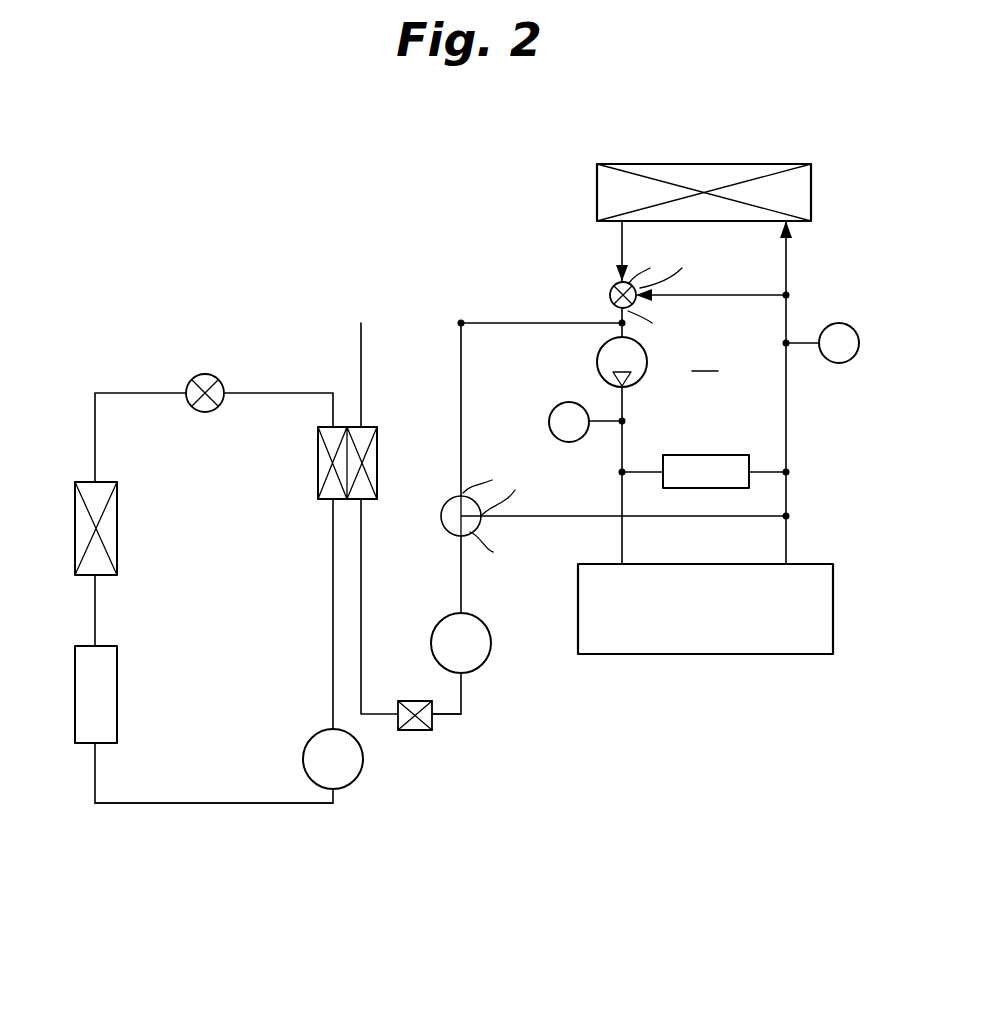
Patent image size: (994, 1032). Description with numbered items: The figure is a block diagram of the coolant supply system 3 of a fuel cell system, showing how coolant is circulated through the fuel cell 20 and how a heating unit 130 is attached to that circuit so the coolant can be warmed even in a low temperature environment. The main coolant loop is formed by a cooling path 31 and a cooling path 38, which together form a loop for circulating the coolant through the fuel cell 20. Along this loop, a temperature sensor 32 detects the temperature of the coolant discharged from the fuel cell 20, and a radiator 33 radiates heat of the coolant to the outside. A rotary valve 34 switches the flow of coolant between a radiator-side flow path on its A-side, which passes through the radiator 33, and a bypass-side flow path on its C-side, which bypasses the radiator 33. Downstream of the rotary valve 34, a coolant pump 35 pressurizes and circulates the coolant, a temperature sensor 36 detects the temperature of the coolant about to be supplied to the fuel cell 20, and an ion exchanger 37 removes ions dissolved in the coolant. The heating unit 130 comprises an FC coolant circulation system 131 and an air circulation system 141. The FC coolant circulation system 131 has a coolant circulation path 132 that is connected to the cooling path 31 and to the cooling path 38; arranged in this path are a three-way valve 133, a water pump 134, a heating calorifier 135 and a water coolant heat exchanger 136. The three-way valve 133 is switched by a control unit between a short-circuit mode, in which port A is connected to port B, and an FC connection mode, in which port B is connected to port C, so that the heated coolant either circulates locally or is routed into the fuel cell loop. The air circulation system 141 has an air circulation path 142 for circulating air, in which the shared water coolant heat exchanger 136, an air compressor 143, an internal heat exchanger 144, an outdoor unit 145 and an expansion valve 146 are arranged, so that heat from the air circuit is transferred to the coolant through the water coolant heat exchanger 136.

The heating unit 130 is at (333, 219).
The FC coolant circulation system 131 is at (408, 298).
The coolant circulation path 132 is at (446, 717).
The three-way valve 133 is at (483, 525).
The water pump 134 is at (488, 655).
The heating calorifier 135 is at (412, 732).
The water coolant heat exchanger 136 is at (378, 455).
The air circulation system 141 is at (193, 341).
The air circulation path 142 is at (220, 805).
The air compressor 143 is at (358, 778).
The internal heat exchanger 144 is at (118, 692).
The outdoor unit 145 is at (118, 530).
The expansion valve 146 is at (207, 372).
The coolant supply system 3 is at (705, 358).
The fuel cell 20 is at (808, 563).
The cooling path 31 is at (788, 398).
The temperature sensor 32 is at (845, 325).
The radiator 33 is at (812, 199).
The rotary valve 34 is at (609, 293).
The coolant pump 35 is at (602, 357).
The temperature sensor 36 is at (549, 418).
The ion exchanger 37 is at (720, 453).
The cooling path 38 is at (623, 448).